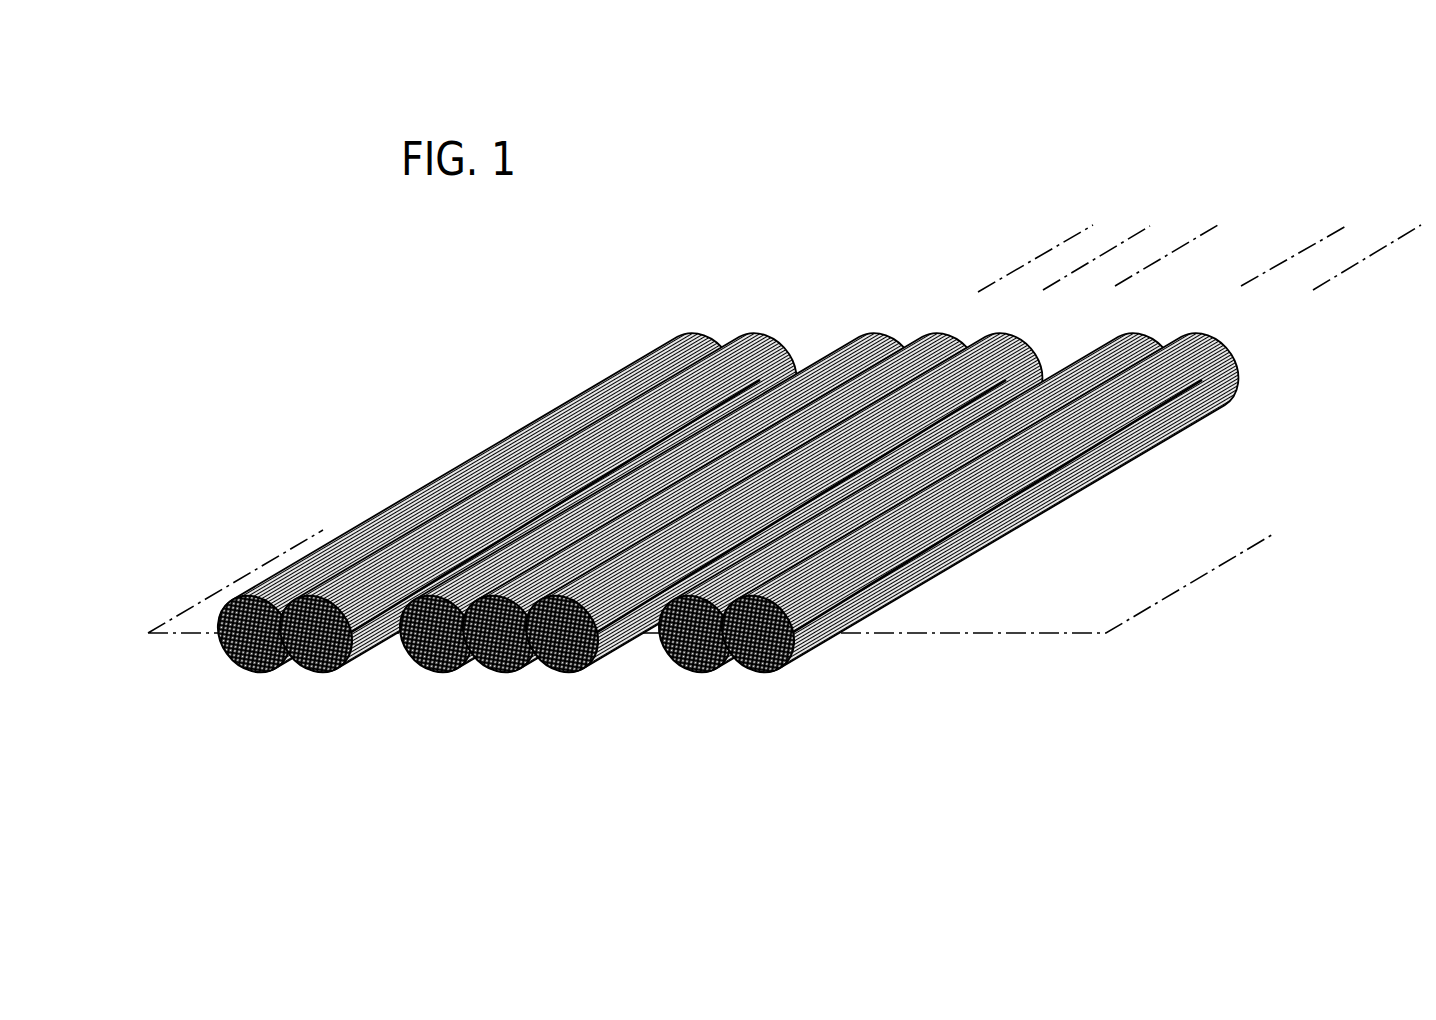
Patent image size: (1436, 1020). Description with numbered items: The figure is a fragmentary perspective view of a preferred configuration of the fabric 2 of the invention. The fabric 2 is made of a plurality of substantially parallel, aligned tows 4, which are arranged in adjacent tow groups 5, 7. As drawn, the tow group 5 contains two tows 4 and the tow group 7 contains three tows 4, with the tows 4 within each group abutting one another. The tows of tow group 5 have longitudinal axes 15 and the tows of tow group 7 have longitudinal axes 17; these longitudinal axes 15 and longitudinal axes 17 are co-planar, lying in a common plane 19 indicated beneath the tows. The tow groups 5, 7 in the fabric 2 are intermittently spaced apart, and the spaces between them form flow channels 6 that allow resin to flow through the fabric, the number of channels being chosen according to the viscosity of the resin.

The fabric 2 is at (726, 512).
The tow 4 is at (726, 512).
The tow group 5 is at (947, 475).
The flow channel 6 is at (374, 656).
The tow group 7 is at (862, 305).
The longitudinal axes 15 is at (1427, 213).
The longitudinal axes 17 is at (1073, 213).
The plane 19 is at (1035, 593).